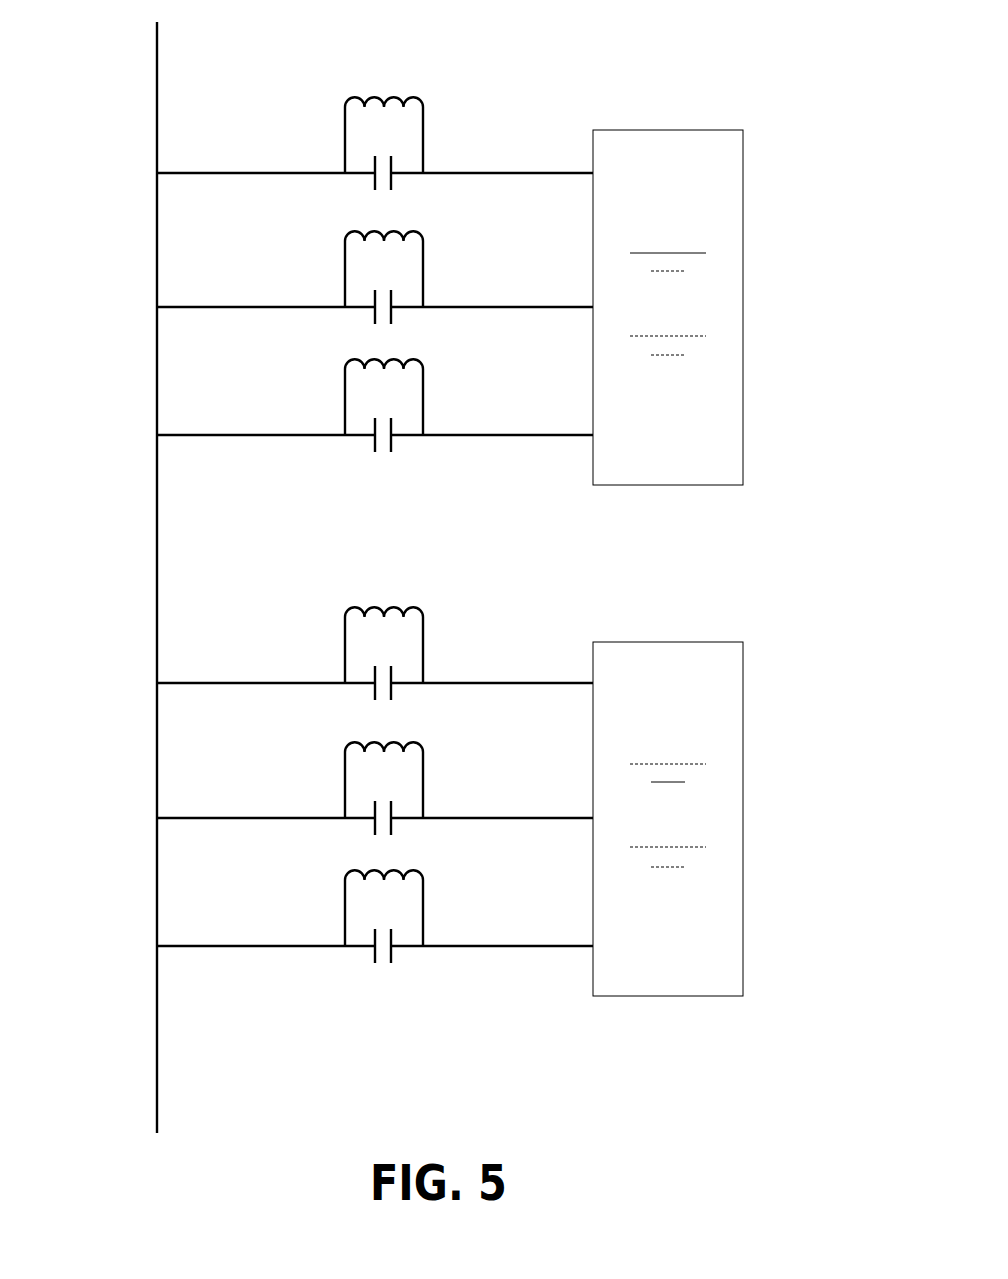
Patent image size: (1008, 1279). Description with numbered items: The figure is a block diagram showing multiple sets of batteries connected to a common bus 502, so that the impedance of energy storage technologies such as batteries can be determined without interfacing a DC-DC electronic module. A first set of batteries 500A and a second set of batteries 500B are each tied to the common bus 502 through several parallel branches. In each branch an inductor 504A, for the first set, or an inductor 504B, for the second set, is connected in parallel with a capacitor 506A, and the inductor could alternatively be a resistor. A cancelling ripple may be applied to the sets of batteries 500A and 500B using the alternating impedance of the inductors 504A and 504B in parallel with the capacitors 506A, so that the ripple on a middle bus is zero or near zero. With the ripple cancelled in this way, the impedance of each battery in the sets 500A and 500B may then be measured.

The common bus 502 is at (140, 540).
The set of batteries 500A is at (757, 293).
The set of batteries 500B is at (757, 805).
The inductor 504A is at (437, 103).
The inductor 504B is at (437, 612).
The capacitor 506A is at (353, 196).